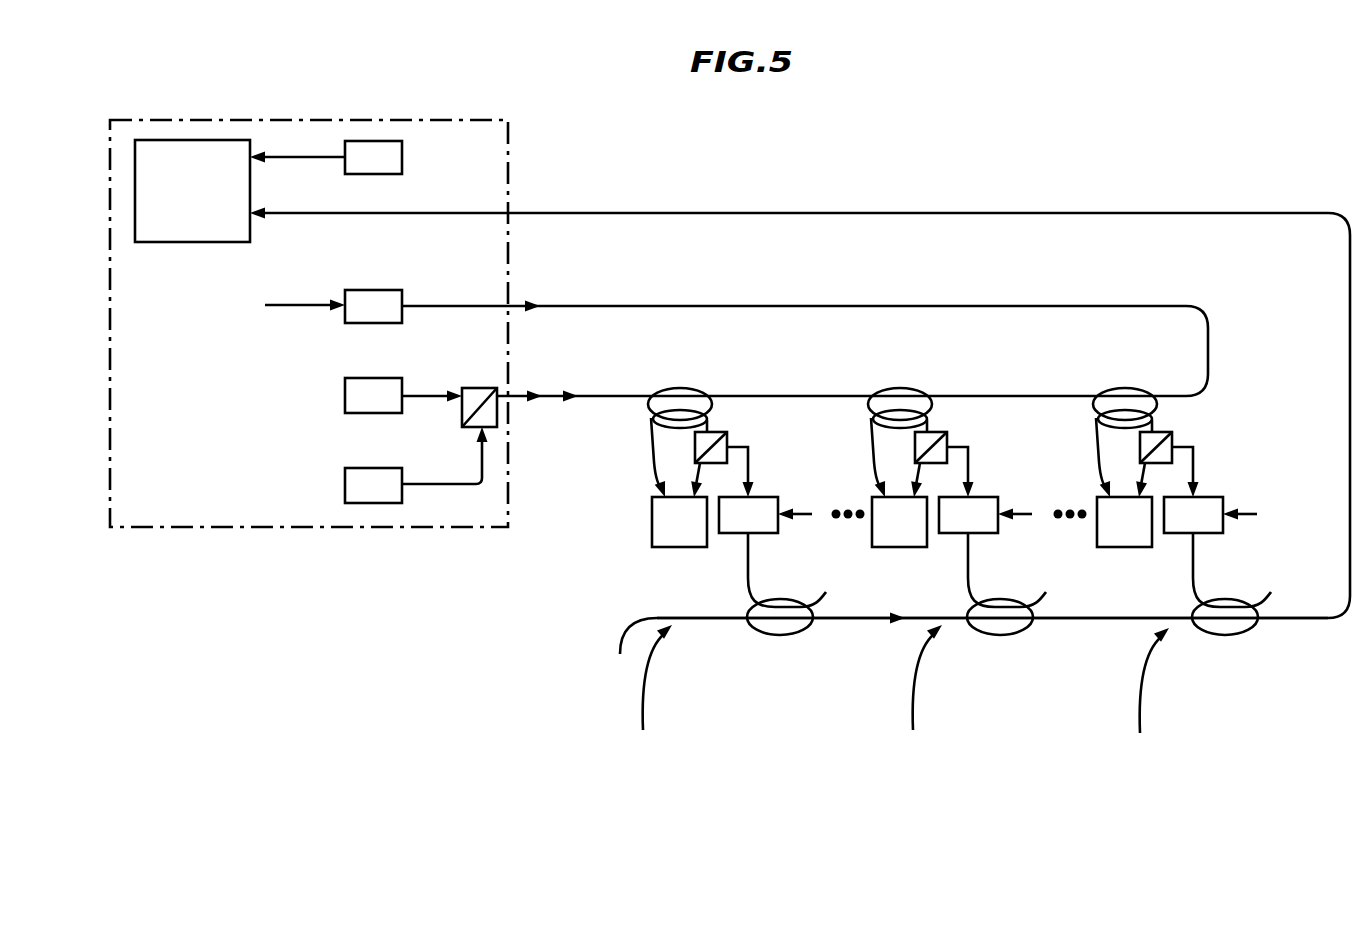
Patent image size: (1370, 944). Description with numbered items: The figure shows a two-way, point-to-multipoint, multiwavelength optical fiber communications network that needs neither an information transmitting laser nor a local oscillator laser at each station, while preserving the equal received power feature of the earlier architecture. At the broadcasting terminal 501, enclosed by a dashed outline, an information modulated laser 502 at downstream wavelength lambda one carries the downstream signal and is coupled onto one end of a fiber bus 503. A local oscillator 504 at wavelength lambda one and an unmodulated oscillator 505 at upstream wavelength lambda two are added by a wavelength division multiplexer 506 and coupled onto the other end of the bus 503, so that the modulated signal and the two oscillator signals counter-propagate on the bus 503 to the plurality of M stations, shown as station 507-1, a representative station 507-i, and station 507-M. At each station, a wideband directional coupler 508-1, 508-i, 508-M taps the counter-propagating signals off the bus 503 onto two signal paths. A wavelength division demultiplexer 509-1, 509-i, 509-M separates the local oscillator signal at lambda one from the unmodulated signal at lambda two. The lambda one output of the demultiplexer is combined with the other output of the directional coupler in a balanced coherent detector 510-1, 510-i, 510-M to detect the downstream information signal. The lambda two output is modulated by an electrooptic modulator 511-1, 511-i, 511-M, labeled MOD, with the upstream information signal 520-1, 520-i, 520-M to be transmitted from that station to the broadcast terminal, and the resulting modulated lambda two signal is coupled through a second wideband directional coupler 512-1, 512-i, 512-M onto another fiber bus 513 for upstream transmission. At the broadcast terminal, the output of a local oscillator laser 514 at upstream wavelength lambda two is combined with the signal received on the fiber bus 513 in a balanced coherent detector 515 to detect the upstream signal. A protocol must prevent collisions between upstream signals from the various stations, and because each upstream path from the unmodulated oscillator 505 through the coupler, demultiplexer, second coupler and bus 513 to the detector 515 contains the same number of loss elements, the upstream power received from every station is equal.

The broadcasting terminal 501 is at (152, 120).
The information modulated laser 502 is at (365, 290).
The fiber bus 503 is at (735, 306).
The local oscillator 504 is at (365, 378).
The unmodulated oscillator 505 is at (365, 468).
The wavelength division multiplexer 506 is at (472, 388).
The station 507-M is at (672, 709).
The station 507-i is at (944, 709).
The station 507-1 is at (1171, 711).
The wideband directional coupler 508-M is at (684, 388).
The wideband directional coupler 508-i is at (904, 388).
The wideband directional coupler 508-1 is at (1129, 388).
The wavelength division demultiplexer 509-M is at (727, 437).
The wavelength division demultiplexer 509-i is at (947, 437).
The wavelength division demultiplexer 509-1 is at (1172, 437).
The balanced coherent detector 510-M is at (652, 536).
The balanced coherent detector 510-i is at (900, 547).
The balanced coherent detector 510-1 is at (1125, 547).
The electrooptic modulator 511-M is at (770, 497).
The electrooptic modulator 511-i is at (990, 497).
The electrooptic modulator 511-1 is at (1215, 497).
The wideband directional coupler 512-M is at (770, 635).
The wideband directional coupler 512-i is at (990, 635).
The wideband directional coupler 512-1 is at (1215, 635).
The fiber bus 513 is at (1113, 618).
The local oscillator laser 514 is at (402, 157).
The balanced coherent detector 515 is at (205, 242).
The upstream information signal 520-M is at (800, 514).
The upstream information signal 520-i is at (1020, 514).
The upstream information signal 520-1 is at (1245, 514).